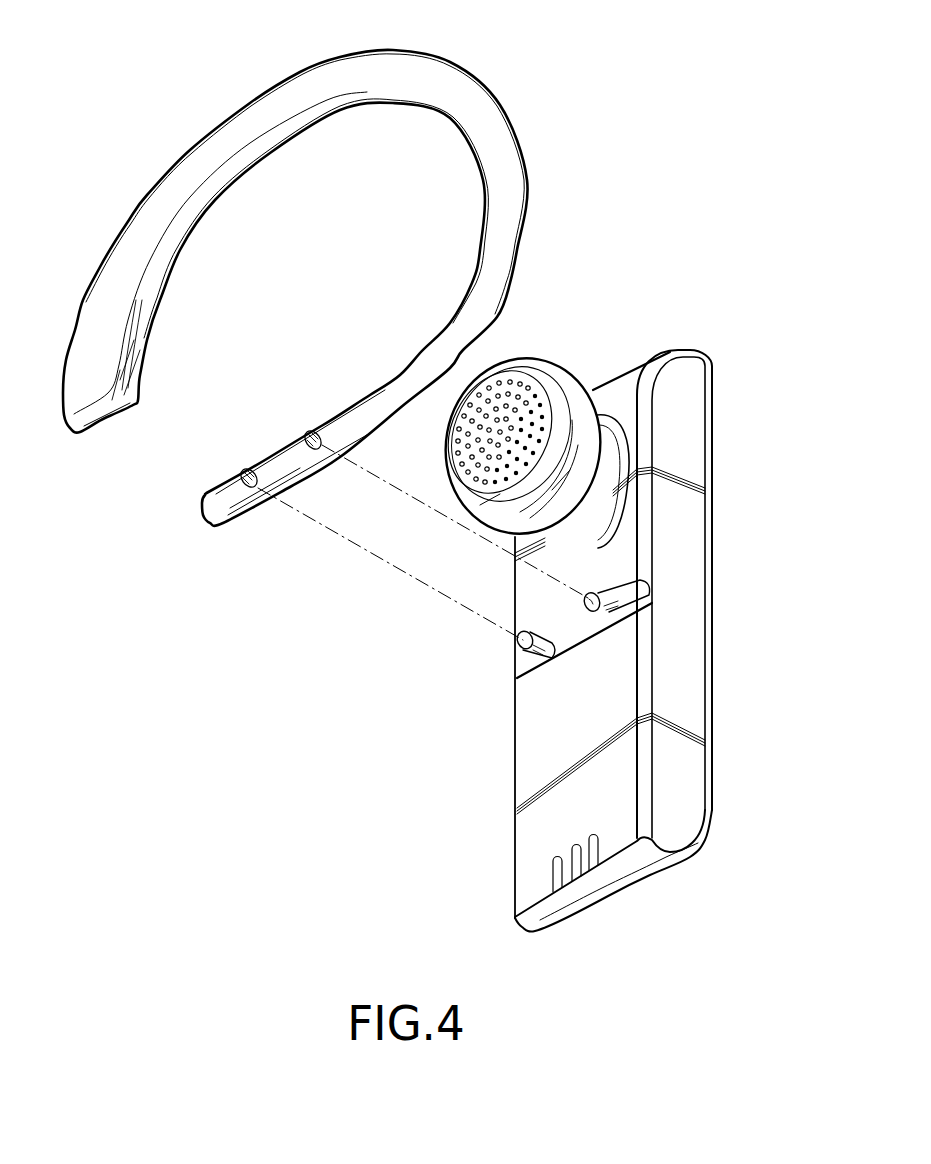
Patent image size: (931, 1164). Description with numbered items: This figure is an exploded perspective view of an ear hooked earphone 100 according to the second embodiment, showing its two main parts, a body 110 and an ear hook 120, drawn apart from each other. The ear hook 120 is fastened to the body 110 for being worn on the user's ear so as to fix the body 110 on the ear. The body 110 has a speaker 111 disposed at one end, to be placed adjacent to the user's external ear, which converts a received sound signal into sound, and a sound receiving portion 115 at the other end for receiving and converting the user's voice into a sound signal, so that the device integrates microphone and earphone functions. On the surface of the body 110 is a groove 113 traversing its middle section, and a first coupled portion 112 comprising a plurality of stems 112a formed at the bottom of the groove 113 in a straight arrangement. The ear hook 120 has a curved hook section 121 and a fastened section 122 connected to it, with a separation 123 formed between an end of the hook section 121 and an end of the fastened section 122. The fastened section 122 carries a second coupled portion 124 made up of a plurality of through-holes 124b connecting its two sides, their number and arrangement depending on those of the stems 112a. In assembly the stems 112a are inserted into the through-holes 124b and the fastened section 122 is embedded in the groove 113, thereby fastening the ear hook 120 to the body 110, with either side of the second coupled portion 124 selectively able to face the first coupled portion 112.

The ear hooked earphone 100 is at (149, 30).
The body 110 is at (556, 619).
The speaker 111 is at (533, 382).
The first coupled portion 112 is at (474, 666).
The stems 112a is at (518, 646).
The groove 113 is at (590, 612).
The sound receiving portion 115 is at (550, 869).
The ear hook 120 is at (340, 339).
The hook section 121 is at (108, 298).
The fastened section 122 is at (249, 508).
The separation 123 is at (157, 470).
The second coupled portion 124 is at (273, 375).
The through-holes 124b is at (246, 468).